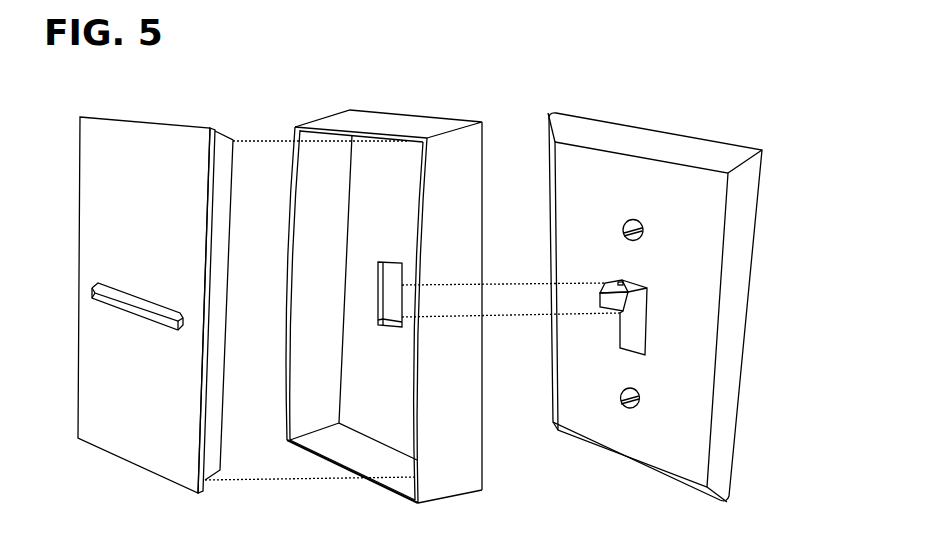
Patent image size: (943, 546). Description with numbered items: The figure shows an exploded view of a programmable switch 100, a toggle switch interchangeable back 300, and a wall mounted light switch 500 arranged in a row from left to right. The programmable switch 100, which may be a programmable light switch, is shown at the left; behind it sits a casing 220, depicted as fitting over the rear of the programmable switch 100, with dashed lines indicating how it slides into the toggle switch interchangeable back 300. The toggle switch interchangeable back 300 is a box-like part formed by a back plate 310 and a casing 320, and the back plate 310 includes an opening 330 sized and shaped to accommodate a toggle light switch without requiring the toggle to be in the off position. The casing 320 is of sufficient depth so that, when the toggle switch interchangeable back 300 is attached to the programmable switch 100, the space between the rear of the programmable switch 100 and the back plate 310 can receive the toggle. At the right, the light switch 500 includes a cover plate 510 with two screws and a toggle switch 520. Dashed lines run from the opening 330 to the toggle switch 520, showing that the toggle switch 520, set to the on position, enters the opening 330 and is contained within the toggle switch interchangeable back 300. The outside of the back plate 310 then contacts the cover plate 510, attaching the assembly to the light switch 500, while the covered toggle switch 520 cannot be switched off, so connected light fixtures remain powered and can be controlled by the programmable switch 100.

The programmable switch 100 is at (48, 145).
The casing 220 is at (279, 208).
The toggle switch interchangeable back 300 is at (270, 130).
The back plate 310 is at (461, 196).
The casing 320 is at (363, 396).
The opening 330 is at (368, 303).
The light switch 500 is at (666, 281).
The cover plate 510 is at (746, 239).
The toggle switch 520 is at (659, 314).